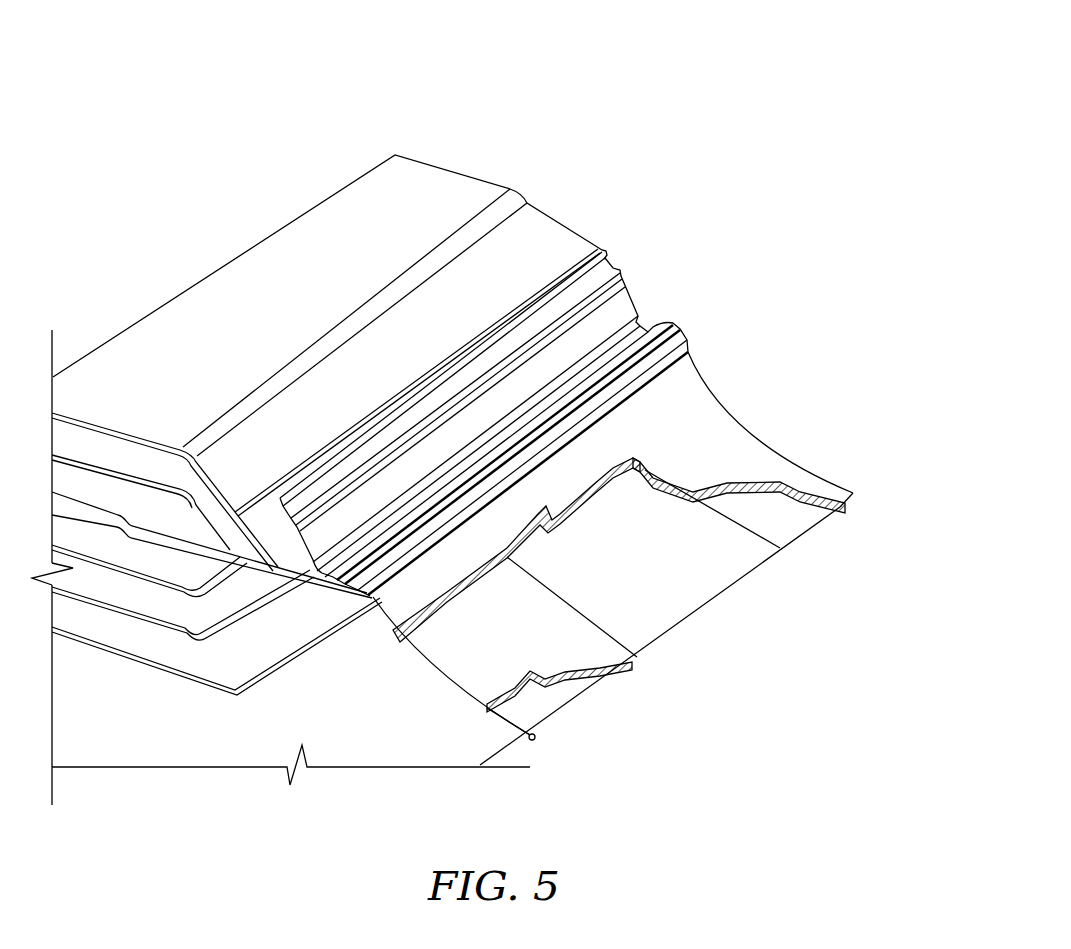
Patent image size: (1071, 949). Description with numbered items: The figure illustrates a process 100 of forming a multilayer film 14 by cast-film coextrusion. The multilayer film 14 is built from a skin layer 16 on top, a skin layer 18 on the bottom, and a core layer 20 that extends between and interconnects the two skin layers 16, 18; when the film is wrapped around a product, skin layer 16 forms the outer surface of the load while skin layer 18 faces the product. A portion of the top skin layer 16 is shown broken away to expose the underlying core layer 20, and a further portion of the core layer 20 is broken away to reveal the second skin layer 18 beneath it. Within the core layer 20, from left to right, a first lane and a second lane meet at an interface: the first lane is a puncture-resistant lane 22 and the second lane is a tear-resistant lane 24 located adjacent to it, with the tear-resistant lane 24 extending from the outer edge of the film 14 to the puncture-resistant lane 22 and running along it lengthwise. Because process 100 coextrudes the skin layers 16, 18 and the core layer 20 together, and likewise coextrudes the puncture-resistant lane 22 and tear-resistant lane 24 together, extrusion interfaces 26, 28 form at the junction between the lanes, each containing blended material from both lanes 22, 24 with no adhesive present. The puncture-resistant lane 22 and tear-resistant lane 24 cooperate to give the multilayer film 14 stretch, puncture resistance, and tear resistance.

The process 100 is at (141, 131).
The multilayer film 14 is at (859, 400).
The skin layer 16 is at (735, 448).
The skin layer 18 is at (533, 712).
The core layer 20 is at (647, 530).
The puncture-resistant lane 22 is at (690, 603).
The tear-resistant lane 24 is at (452, 647).
The extrusion interface 26 is at (633, 647).
The extrusion interface 28 is at (782, 548).